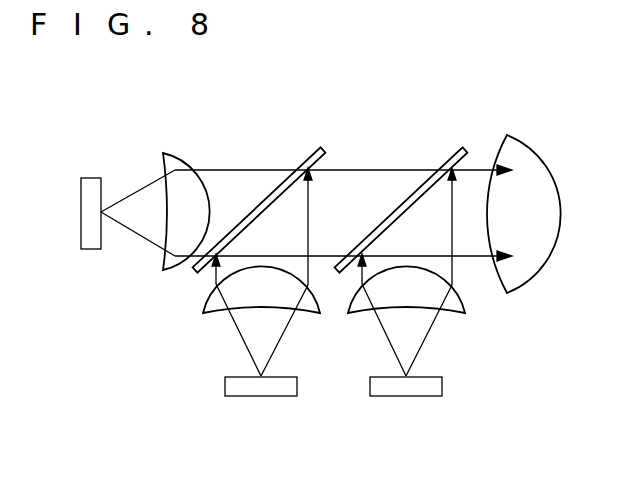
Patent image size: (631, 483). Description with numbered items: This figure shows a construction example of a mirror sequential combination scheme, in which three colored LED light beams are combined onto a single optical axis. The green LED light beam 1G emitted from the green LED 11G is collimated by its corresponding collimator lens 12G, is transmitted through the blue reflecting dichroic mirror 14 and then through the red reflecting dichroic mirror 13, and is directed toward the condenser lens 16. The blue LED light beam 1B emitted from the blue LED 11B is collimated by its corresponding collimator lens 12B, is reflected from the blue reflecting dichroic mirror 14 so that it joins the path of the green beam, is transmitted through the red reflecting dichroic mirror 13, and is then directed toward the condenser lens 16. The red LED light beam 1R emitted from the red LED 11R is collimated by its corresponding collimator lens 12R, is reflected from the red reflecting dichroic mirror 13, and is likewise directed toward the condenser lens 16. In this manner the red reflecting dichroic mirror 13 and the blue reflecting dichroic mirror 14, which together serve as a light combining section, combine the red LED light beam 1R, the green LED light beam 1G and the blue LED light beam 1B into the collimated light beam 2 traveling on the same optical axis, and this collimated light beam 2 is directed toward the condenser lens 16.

The green LED 11G is at (93, 221).
The collimator lens 12G is at (183, 228).
The green LED light beam 1G is at (214, 168).
The blue reflecting dichroic mirror 14 is at (262, 197).
The blue LED light beam 1B is at (312, 205).
The red reflecting dichroic mirror 13 is at (408, 200).
The collimated light beam 2 is at (474, 168).
The red LED light beam 1R is at (453, 236).
The condenser lens 16 is at (543, 214).
The collimator lens 12B is at (248, 293).
The blue LED 11B is at (258, 388).
The collimator lens 12R is at (431, 293).
The red LED 11R is at (404, 388).